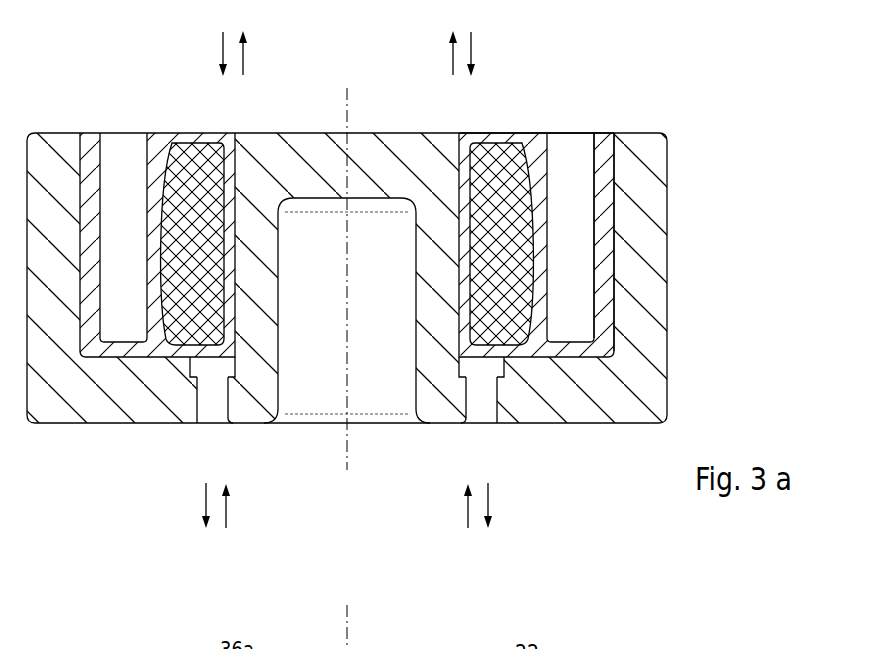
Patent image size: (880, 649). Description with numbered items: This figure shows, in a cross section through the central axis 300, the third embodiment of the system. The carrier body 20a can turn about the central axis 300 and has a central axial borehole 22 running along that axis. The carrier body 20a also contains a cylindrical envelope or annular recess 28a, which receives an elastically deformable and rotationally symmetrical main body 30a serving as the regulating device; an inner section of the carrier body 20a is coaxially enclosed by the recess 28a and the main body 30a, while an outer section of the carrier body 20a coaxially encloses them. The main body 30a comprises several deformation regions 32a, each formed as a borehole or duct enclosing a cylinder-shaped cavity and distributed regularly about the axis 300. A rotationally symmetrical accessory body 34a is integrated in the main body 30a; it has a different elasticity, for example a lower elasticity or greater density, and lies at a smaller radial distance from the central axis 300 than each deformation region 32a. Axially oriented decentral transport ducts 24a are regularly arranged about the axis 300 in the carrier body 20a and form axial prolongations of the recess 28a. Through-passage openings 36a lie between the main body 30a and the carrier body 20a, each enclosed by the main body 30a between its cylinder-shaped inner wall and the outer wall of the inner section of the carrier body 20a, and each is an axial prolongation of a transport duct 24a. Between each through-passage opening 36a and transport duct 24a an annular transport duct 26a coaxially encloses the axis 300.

The carrier body 20a is at (676, 275).
The central axial borehole 22 is at (386, 388).
The transport duct 24a is at (215, 405).
The annular transport duct 26a is at (197, 368).
The annular recess 28a is at (603, 165).
The main body 30a is at (509, 124).
The deformation region 32a is at (122, 156).
The accessory body 34a is at (190, 158).
The through-passage opening 36a is at (235, 142).
The central axis 300 is at (348, 95).